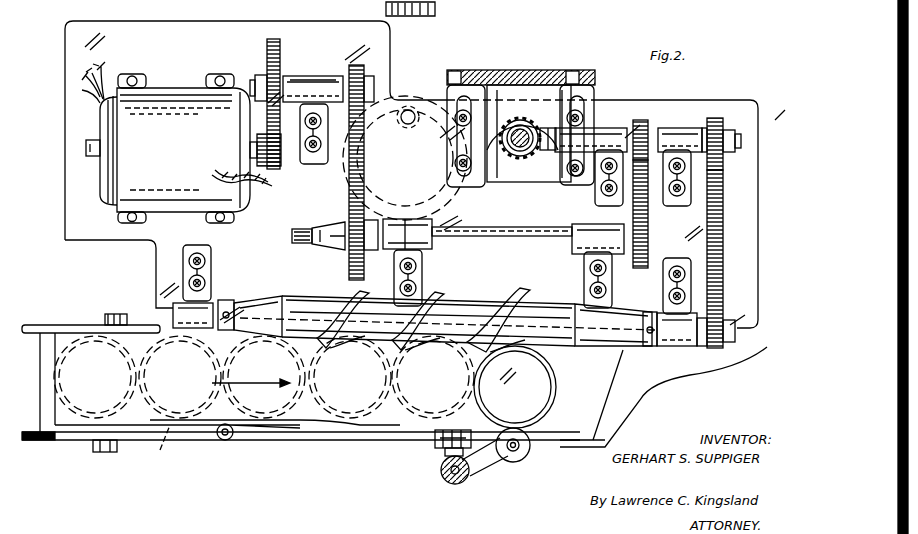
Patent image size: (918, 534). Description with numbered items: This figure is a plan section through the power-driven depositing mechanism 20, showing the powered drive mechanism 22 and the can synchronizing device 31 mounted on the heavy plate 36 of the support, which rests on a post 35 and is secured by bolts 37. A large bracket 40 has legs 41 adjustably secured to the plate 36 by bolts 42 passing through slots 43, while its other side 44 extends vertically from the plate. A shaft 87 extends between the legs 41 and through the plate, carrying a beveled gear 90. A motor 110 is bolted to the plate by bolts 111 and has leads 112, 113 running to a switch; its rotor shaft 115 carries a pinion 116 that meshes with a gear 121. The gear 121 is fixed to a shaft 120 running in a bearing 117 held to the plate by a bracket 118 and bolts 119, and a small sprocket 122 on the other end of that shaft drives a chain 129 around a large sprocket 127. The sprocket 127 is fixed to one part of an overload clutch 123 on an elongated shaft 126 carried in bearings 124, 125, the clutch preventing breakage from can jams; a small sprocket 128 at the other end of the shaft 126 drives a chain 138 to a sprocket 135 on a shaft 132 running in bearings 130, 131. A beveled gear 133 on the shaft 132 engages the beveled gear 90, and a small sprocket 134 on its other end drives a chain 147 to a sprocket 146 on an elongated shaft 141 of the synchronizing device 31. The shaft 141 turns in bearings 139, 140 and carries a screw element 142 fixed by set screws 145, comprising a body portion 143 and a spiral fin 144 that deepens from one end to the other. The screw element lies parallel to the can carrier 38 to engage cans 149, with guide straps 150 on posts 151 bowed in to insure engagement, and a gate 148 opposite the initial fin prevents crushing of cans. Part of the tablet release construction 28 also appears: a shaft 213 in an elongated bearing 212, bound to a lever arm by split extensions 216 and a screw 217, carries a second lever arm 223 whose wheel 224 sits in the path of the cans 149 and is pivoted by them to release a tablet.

The depositing mechanism 20 is at (762, 70).
The powered drive mechanism 22 is at (600, 85).
The tablet release construction 28 is at (435, 486).
The can synchronizing device 31 is at (505, 292).
The post 35 is at (430, 184).
The plate 36 is at (320, 36).
The bolts 37 is at (400, 124).
The can carrier 38 is at (72, 422).
The large bracket 40 is at (524, 70).
The legs 41 is at (447, 92).
The bolts 42 is at (456, 160).
The slots 43 is at (452, 71).
The other side 44 is at (494, 70).
The shaft 87 is at (512, 156).
The beveled gear 90 is at (520, 151).
The motor 110 is at (175, 150).
The bolts 111 is at (133, 76).
The lead 112 is at (82, 93).
The lead 113 is at (101, 66).
The rotor shaft 115 is at (86, 147).
The pinion 116 is at (280, 166).
The bearing 117 is at (318, 76).
The bracket 118 is at (322, 165).
The bolts 119 is at (306, 140).
The shaft 120 is at (256, 84).
The gear 121 is at (275, 40).
The small sprocket 122 is at (366, 76).
The overload clutch 123 is at (285, 246).
The bearing 124 is at (425, 221).
The bearing 125 is at (580, 224).
The elongated shaft 126 is at (478, 238).
The large sprocket 127 is at (350, 262).
The small sprocket 128 is at (638, 265).
The chain 129 is at (372, 150).
The bearing 130 is at (605, 130).
The bearing 131 is at (682, 130).
The shaft 132 is at (741, 141).
The beveled gear 133 is at (545, 152).
The small sprocket 134 is at (710, 118).
The small sprocket 135 is at (640, 120).
The chain 138 is at (648, 220).
The bearing 139 is at (190, 345).
The bearing 140 is at (672, 346).
The elongated shaft 141 is at (173, 310).
The screw element 142 is at (578, 348).
The body portion 143 is at (292, 300).
The spiral fin 144 is at (444, 298).
The set screws 145 is at (228, 300).
The small sprocket 146 is at (712, 348).
The chain 147 is at (723, 268).
The gate 148 is at (335, 440).
The cans 149 is at (165, 445).
The guide straps 150 is at (68, 325).
The posts 151 is at (112, 314).
The elongated bearing 212 is at (455, 484).
The shaft 213 is at (458, 480).
The split extensions 216 is at (445, 449).
The screw 217 is at (447, 456).
The second lever arm 223 is at (480, 466).
The wheel 224 is at (520, 460).